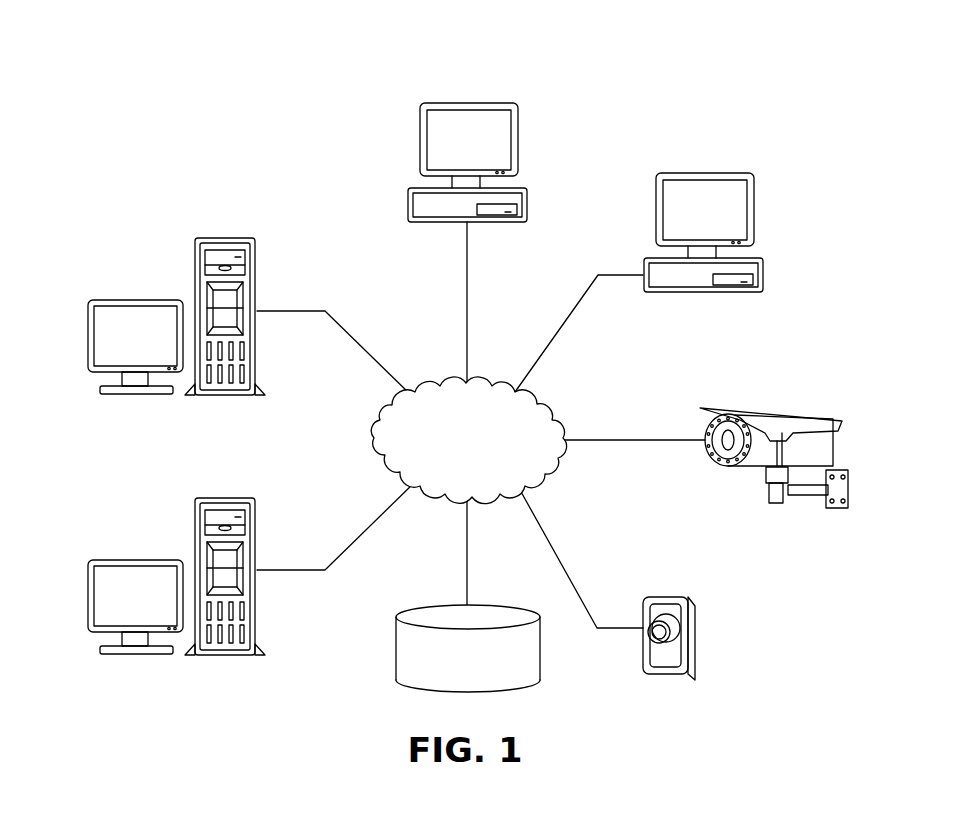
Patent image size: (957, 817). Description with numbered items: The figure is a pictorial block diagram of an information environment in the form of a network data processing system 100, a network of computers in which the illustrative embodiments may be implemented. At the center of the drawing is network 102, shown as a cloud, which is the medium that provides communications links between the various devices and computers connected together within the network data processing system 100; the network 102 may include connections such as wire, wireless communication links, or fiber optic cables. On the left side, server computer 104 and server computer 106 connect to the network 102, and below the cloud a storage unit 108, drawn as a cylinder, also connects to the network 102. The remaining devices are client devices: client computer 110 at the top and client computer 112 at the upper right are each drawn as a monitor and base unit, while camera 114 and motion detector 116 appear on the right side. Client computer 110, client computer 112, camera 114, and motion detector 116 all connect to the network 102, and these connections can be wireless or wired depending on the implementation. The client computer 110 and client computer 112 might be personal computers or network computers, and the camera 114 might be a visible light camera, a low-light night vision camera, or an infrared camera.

The network data processing system 100 is at (163, 88).
The network 102 is at (440, 388).
The server computer 104 is at (87, 332).
The server computer 106 is at (87, 593).
The storage unit 108 is at (396, 657).
The client computer 110 is at (530, 200).
The client computer 112 is at (768, 265).
The camera 114 is at (834, 450).
The motion detector 116 is at (699, 648).